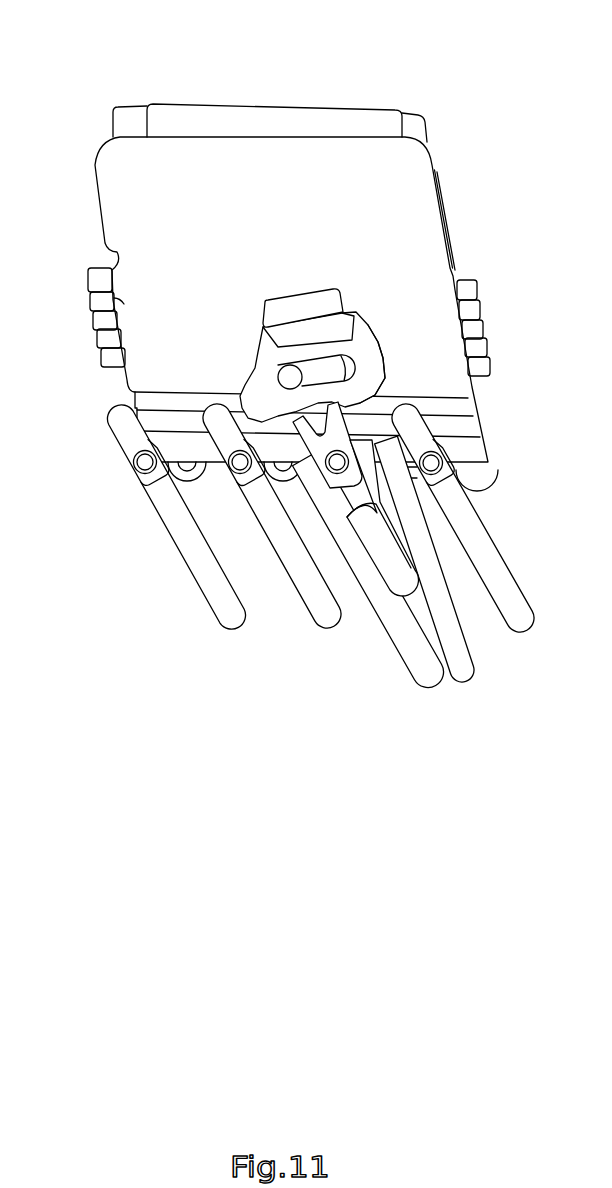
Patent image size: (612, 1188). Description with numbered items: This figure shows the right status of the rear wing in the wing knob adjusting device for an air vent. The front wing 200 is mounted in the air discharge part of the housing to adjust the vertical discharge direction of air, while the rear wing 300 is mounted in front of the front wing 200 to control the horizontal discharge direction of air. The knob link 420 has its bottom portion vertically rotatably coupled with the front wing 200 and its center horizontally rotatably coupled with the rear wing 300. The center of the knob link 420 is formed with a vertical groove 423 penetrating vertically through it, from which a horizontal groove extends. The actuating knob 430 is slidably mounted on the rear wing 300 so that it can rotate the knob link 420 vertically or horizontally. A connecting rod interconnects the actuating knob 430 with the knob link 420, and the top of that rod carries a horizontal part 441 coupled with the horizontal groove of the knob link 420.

The front wing 200 is at (140, 209).
The rear wing 300 is at (316, 594).
The knob link 420 is at (365, 347).
The vertical groove 423 is at (376, 380).
The actuating knob 430 is at (443, 647).
The horizontal part 441 is at (293, 372).